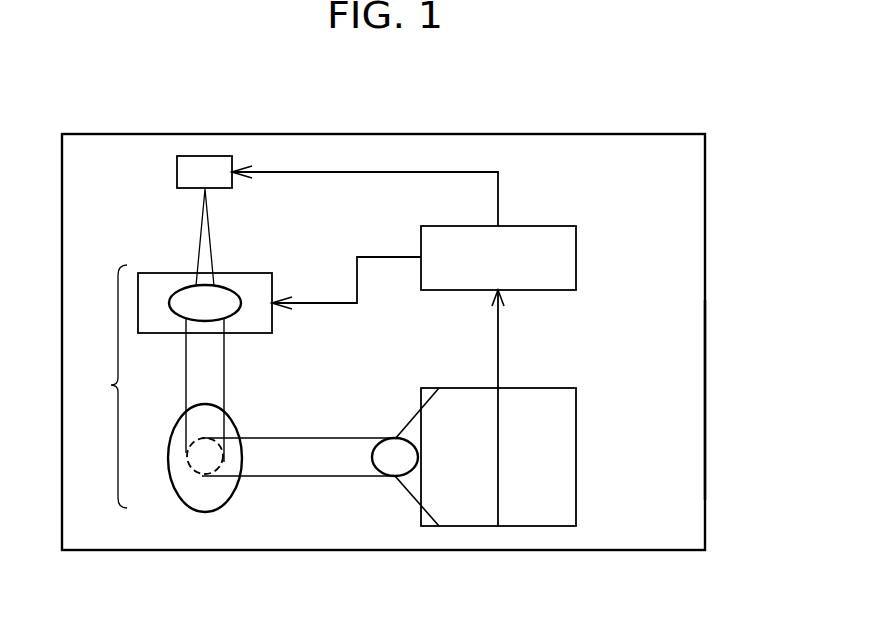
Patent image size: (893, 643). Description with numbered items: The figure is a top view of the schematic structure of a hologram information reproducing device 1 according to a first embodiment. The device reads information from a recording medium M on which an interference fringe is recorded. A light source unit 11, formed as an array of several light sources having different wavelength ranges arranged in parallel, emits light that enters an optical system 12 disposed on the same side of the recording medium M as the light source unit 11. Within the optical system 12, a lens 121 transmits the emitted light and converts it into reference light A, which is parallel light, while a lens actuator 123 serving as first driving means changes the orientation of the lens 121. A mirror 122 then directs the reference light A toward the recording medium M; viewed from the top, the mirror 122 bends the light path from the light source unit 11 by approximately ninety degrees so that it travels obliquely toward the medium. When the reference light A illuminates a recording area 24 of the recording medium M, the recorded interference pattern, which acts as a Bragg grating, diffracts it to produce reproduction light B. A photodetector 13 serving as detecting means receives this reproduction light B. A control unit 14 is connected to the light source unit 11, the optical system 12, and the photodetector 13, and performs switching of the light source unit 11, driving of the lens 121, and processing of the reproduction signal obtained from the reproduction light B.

The hologram information reproducing device 1 is at (707, 118).
The light source unit 11 is at (208, 162).
The optical system 12 is at (104, 386).
The lens 121 is at (223, 300).
The mirror 122 is at (230, 430).
The lens actuator 123 is at (250, 323).
The photodetector 13 is at (547, 507).
The control unit 14 is at (597, 277).
The recording area 24 is at (390, 460).
The reference light A is at (212, 378).
The reproduction light B is at (310, 463).
The recording medium M is at (675, 452).